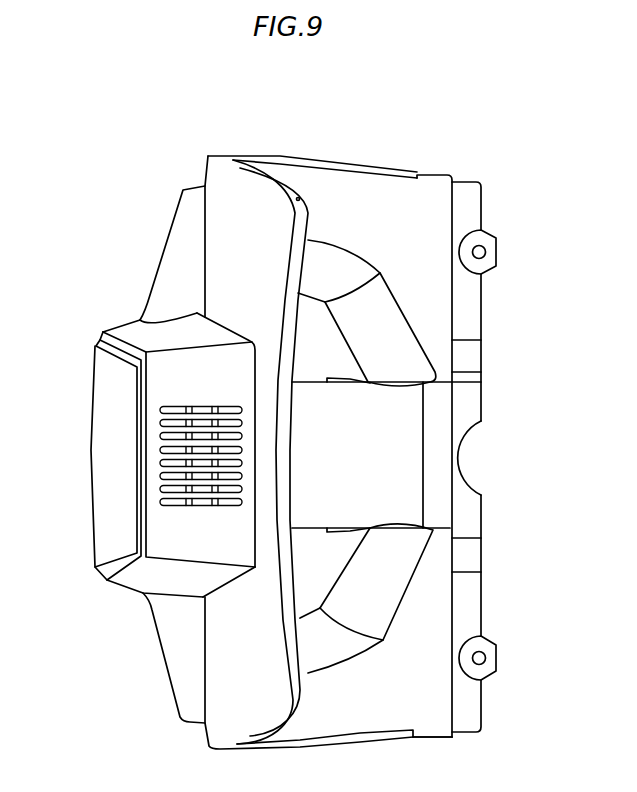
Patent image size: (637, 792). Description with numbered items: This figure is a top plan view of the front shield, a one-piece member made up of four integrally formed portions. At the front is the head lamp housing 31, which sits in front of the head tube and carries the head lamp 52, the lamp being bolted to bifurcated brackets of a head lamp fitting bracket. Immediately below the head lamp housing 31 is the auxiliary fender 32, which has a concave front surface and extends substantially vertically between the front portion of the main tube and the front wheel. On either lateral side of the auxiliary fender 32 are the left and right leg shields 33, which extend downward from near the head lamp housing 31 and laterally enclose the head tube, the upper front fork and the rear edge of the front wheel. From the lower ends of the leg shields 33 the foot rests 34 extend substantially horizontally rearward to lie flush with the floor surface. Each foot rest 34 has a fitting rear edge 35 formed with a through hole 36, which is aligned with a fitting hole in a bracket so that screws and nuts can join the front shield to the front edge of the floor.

The head lamp housing 31 is at (124, 326).
The auxiliary fender 32 is at (380, 413).
The leg shield 33 is at (208, 175).
The foot rest 34 is at (428, 192).
The fitting rear edge 35 is at (473, 317).
The through hole 36 is at (486, 252).
The head lamp 52 is at (100, 463).